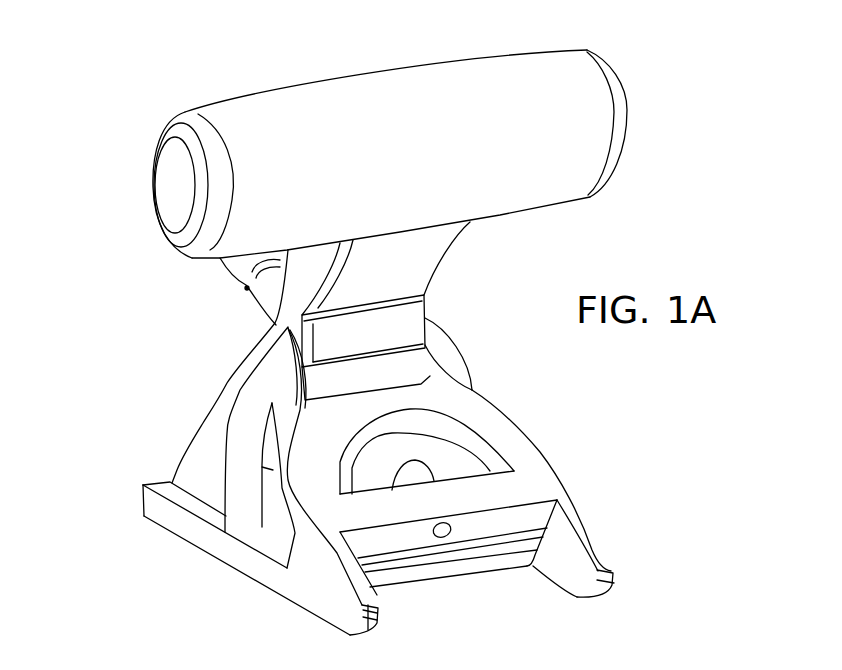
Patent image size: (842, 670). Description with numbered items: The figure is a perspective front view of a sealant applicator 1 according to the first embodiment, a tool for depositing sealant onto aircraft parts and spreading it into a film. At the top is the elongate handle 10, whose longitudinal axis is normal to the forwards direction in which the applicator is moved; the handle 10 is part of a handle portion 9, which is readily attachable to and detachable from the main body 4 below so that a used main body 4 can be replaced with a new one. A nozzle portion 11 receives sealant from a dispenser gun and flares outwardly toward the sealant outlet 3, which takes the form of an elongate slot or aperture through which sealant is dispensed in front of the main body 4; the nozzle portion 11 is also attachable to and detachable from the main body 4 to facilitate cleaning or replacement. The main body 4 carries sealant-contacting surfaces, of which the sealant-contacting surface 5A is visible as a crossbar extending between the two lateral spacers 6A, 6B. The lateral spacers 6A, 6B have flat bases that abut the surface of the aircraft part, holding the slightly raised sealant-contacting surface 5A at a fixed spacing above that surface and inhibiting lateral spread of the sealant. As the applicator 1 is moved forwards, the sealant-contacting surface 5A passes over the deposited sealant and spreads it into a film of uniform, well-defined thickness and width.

The sealant applicator 1 is at (121, 171).
The sealant outlet 3 is at (497, 547).
The main body 4 is at (276, 537).
The sealant-contacting surface 5A is at (448, 565).
The lateral spacer 6A is at (275, 574).
The lateral spacer 6B is at (614, 573).
The handle portion 9 is at (398, 116).
The handle 10 is at (273, 137).
The nozzle portion 11 is at (247, 288).